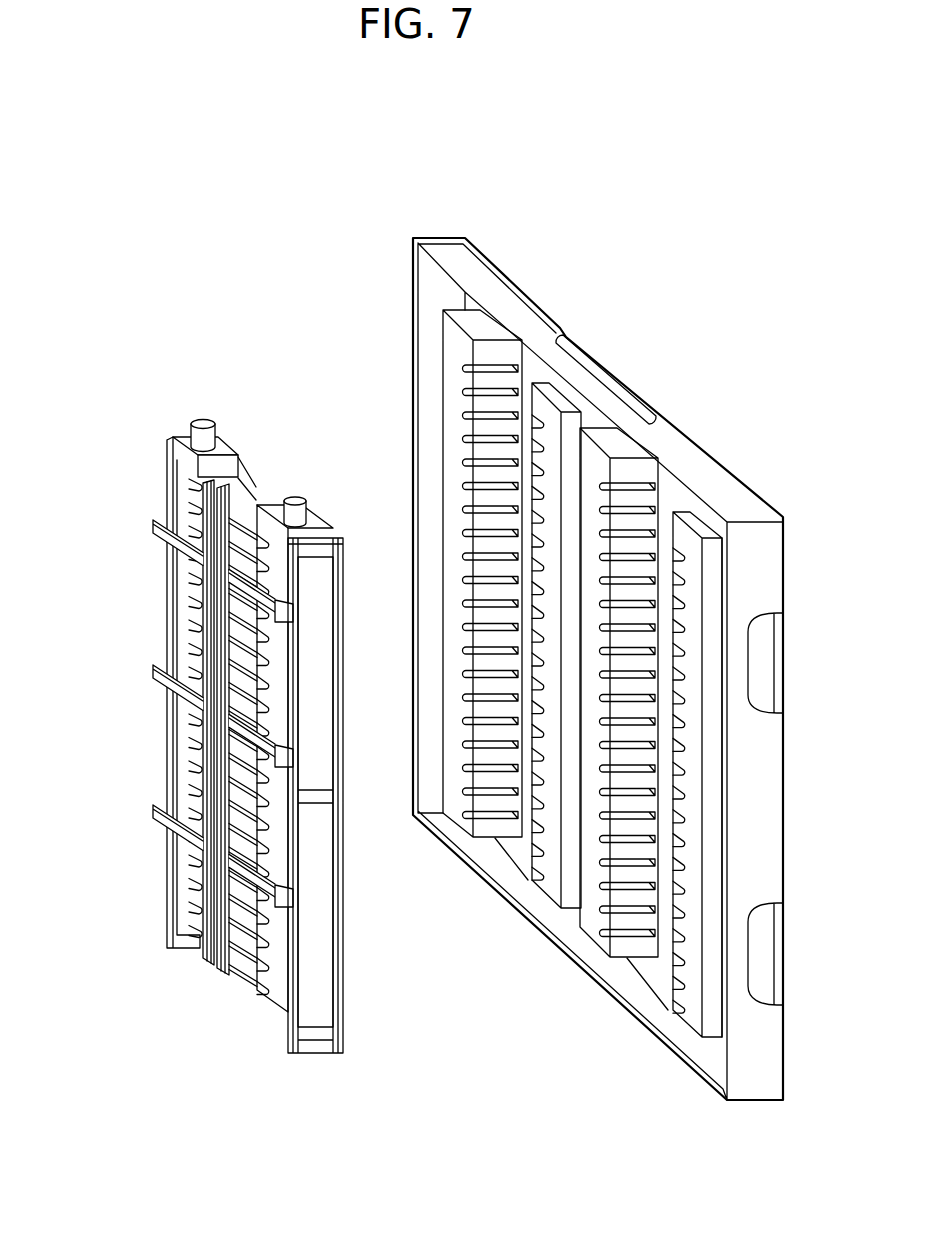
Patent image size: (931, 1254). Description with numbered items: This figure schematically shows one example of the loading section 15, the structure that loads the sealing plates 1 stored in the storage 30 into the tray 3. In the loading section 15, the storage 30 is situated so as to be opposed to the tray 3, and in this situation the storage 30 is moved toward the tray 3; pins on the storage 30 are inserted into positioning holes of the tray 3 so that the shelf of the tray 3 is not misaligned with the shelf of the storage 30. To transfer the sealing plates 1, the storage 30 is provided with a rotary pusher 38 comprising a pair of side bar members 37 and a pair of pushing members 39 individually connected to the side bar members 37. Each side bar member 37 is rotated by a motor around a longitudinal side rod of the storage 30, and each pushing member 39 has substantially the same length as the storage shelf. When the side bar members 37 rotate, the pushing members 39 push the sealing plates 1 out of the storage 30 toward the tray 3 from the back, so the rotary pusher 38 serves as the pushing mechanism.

The sealing plate 1 is at (250, 485).
The tray 3 is at (531, 247).
The loading section 15 is at (198, 200).
The storage 30 is at (179, 363).
The side bar member 37 is at (167, 463).
The rotary pusher 38 is at (118, 675).
The pushing member 39 is at (203, 955).